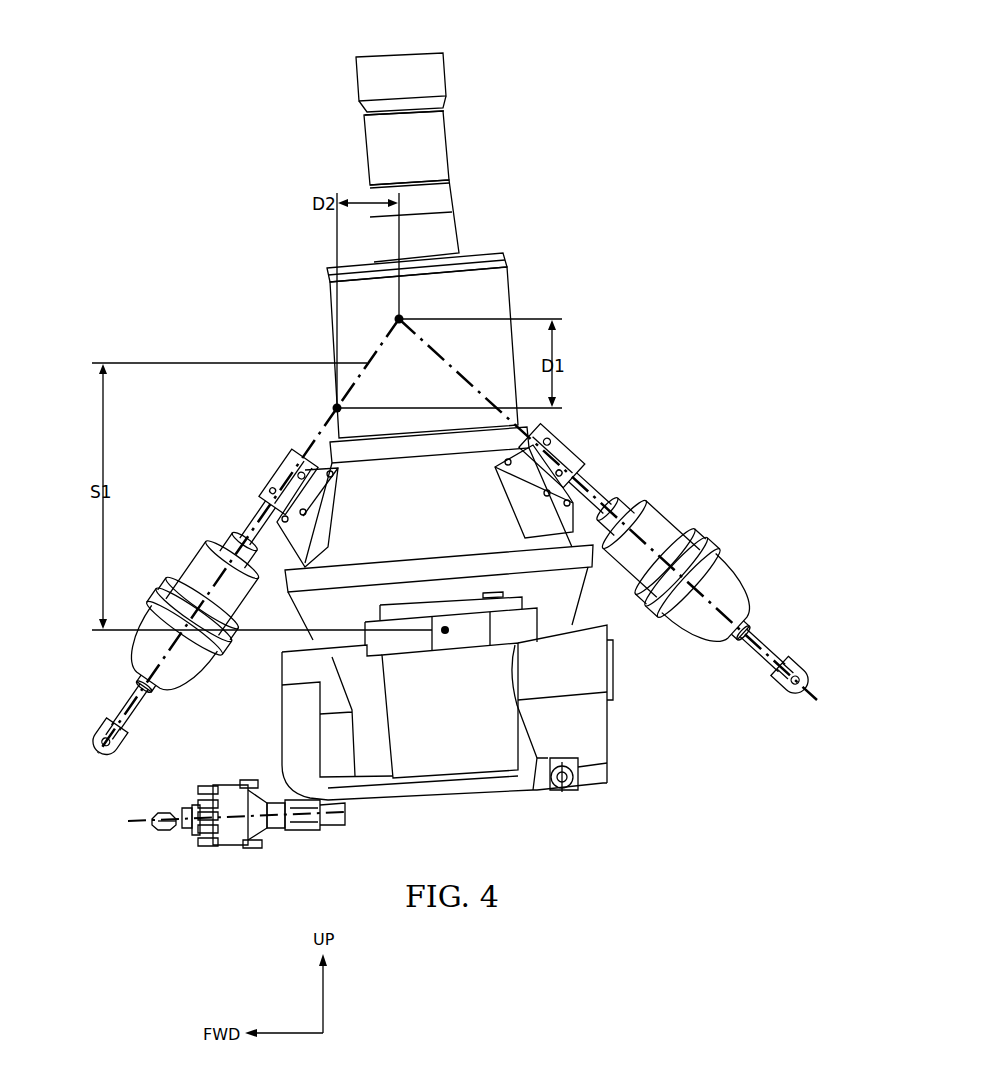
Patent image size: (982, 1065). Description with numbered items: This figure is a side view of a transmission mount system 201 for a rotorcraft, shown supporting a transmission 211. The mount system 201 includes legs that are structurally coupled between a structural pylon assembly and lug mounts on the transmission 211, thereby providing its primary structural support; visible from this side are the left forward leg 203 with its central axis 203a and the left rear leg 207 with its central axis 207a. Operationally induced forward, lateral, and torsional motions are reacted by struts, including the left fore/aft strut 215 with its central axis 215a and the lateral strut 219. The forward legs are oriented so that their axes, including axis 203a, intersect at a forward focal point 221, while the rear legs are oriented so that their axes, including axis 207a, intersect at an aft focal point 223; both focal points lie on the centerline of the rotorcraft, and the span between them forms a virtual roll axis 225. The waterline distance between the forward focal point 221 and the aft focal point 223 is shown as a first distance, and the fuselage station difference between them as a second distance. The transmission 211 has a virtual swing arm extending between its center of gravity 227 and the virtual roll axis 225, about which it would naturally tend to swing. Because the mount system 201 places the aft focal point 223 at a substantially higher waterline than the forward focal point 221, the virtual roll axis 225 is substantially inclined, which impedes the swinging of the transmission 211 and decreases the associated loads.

The mount system 201 is at (217, 262).
The left forward leg 203 is at (163, 578).
The central axis of left forward leg 203a is at (100, 752).
The left rear leg 207 is at (707, 536).
The central axis of left rear leg 207a is at (827, 673).
The transmission 211 is at (509, 296).
The left fore/aft strut 215 is at (237, 845).
The central axis of left fore/aft strut 215a is at (130, 823).
The lateral strut 219 is at (562, 793).
The forward focal point 221 is at (335, 406).
The aft focal point 223 is at (400, 316).
The virtual roll axis 225 is at (369, 366).
The center of gravity 227 is at (455, 633).